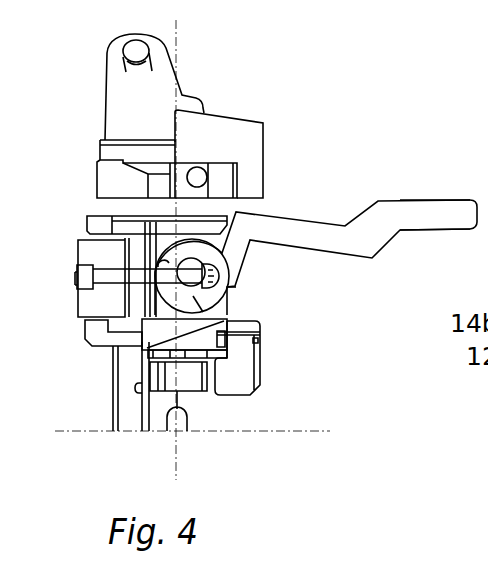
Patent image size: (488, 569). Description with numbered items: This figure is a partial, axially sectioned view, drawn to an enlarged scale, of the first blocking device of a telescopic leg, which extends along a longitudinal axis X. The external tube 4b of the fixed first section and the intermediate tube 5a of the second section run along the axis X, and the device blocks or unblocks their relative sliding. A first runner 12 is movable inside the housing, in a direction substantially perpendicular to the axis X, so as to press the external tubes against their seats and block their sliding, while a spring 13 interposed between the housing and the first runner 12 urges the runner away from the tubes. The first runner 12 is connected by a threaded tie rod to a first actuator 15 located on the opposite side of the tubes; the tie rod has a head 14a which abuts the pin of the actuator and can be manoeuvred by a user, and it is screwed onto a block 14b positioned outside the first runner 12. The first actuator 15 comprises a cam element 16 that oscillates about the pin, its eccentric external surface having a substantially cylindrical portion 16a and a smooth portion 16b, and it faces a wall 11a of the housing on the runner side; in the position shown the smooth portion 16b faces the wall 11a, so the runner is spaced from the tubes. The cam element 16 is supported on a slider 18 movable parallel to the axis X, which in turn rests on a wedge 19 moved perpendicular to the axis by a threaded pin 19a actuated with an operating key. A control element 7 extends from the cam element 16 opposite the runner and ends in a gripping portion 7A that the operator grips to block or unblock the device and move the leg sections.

The longitudinal axis X is at (176, 35).
The external tube 4b is at (121, 395).
The intermediate tube 5a is at (189, 395).
The control element 7 is at (379, 195).
The gripping portion 7A is at (441, 193).
The wall 11a is at (110, 215).
The first runner 12 is at (88, 252).
The spring 13 is at (107, 290).
The head 14a is at (213, 258).
The block 14b is at (77, 284).
The first actuator 15 is at (233, 287).
The cam element 16 is at (190, 398).
The substantially cylindrical portion 16a is at (193, 296).
The smooth portion 16b is at (146, 333).
The slider 18 is at (143, 342).
The wedge 19 is at (212, 340).
The threaded pin 19a is at (259, 341).